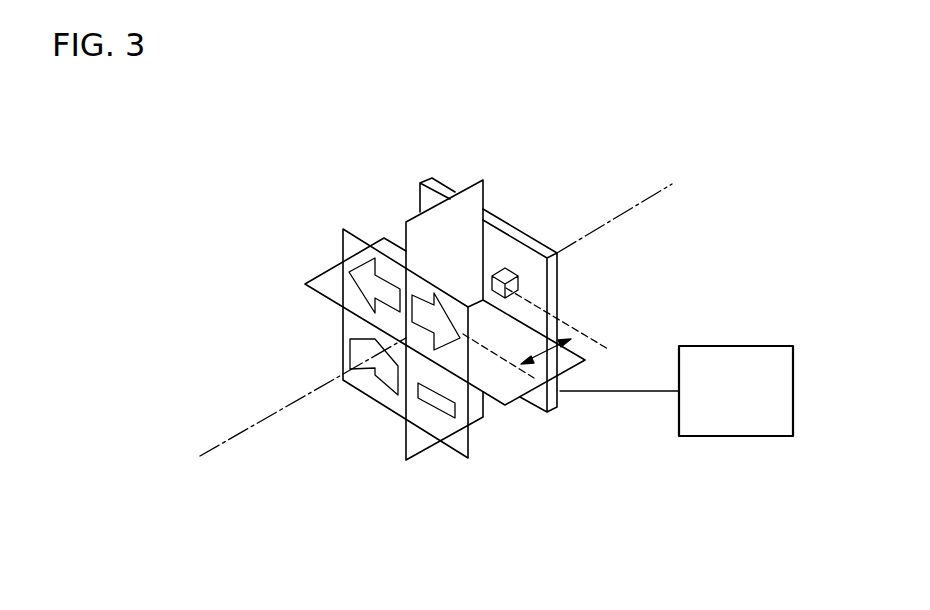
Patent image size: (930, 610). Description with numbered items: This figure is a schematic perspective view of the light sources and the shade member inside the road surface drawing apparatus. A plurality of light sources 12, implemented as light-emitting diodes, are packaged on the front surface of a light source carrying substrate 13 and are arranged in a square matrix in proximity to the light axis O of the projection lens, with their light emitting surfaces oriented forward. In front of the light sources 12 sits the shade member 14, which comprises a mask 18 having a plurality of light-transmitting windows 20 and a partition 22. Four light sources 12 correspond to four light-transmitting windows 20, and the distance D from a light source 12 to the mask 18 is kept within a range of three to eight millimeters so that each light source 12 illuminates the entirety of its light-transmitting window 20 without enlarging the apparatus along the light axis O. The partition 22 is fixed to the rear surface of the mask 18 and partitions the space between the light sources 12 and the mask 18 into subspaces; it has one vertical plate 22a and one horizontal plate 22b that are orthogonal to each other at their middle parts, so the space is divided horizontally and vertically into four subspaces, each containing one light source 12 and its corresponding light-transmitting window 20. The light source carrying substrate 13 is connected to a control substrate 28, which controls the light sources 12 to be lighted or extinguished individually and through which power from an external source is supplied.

The light source 12 is at (504, 268).
The light source carrying substrate 13 is at (528, 313).
The shade member 14 is at (355, 219).
The mask 18 is at (418, 287).
The light-transmitting window 20 is at (430, 322).
The partition 22 is at (578, 553).
The vertical plate 22a is at (418, 445).
The horizontal plate 22b is at (513, 390).
The control substrate 28 is at (736, 437).
The distance D is at (540, 360).
The light axis O is at (230, 447).